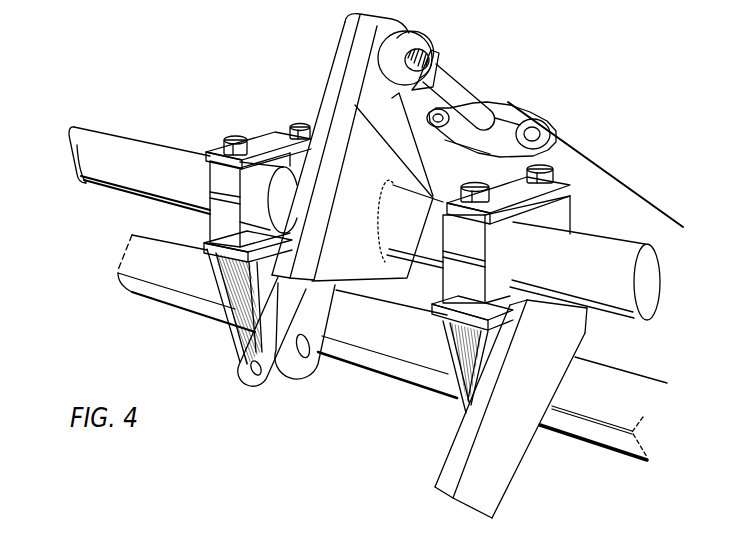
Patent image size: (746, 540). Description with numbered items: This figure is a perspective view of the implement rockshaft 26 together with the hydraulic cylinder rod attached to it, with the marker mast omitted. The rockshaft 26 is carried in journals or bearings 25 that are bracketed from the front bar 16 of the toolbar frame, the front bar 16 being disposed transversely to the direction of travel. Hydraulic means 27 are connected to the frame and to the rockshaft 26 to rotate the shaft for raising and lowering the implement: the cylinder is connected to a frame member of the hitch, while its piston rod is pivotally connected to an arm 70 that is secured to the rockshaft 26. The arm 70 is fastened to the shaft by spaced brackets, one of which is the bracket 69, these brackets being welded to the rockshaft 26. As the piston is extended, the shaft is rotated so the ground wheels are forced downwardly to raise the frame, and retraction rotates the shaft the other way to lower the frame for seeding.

The front bar 16 is at (397, 338).
The journals or bearings 25 is at (473, 293).
The rockshaft 26 is at (79, 152).
The hydraulic means 27 is at (509, 101).
The bracket 69 is at (376, 178).
The arm 70 is at (338, 58).